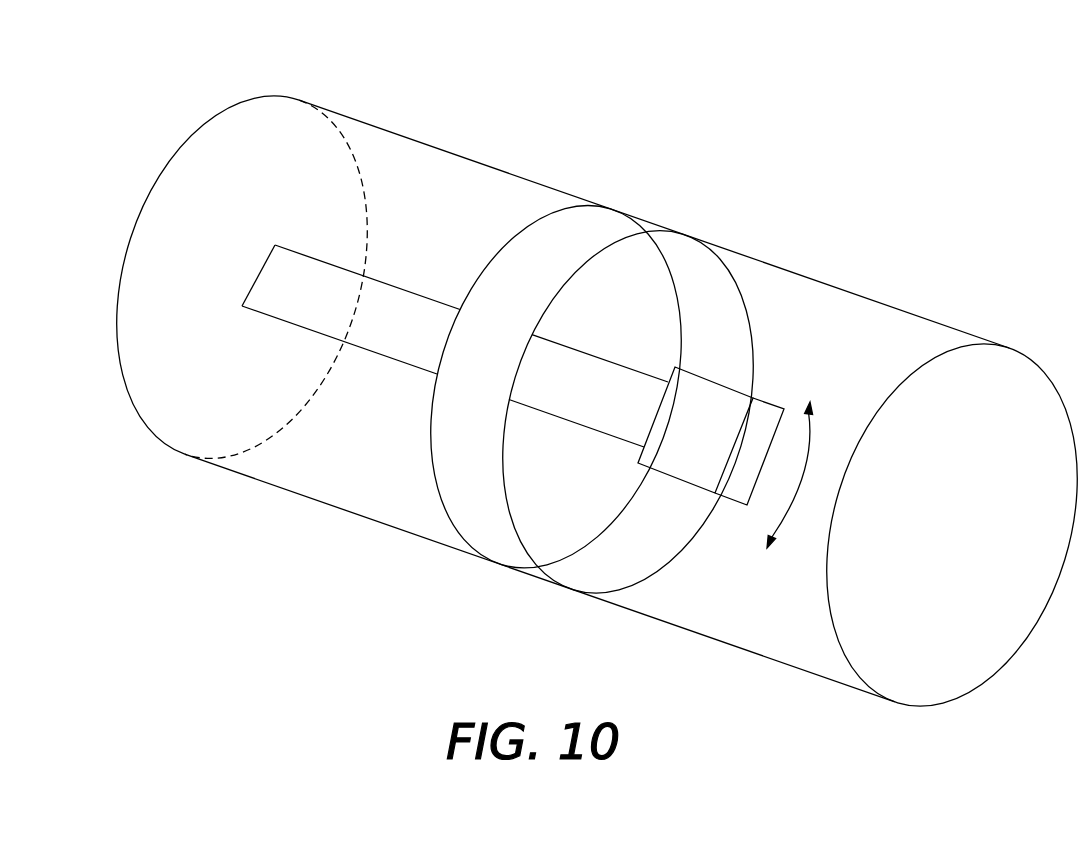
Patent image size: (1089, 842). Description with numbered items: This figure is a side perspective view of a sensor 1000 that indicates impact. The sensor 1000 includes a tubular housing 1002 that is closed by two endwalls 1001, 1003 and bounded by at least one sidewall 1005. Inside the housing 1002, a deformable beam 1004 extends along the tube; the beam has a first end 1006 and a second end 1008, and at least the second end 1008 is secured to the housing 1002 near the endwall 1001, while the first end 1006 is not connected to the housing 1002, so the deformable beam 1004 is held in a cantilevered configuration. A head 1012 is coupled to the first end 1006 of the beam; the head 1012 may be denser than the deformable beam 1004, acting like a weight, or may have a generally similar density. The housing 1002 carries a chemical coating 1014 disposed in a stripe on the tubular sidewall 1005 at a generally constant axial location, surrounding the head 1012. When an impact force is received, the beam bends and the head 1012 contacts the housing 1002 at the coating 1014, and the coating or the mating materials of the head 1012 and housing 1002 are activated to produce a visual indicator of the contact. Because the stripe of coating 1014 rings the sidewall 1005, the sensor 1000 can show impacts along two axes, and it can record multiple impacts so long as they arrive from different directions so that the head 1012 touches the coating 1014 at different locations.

The sensor 1000 is at (727, 185).
The endwall 1001 is at (210, 142).
The housing 1002 is at (800, 273).
The endwall 1003 is at (973, 652).
The deformable beam 1004 is at (449, 362).
The sidewall 1005 is at (503, 172).
The first end 1006 is at (643, 443).
The second end 1008 is at (241, 309).
The head 1012 is at (725, 403).
The chemical coating 1014 is at (652, 578).